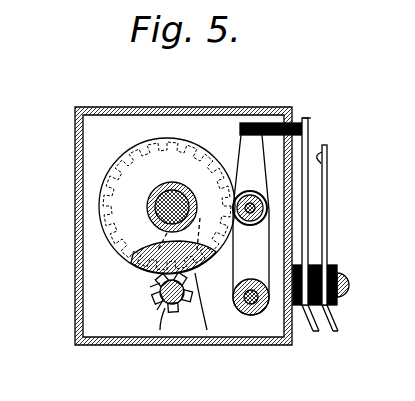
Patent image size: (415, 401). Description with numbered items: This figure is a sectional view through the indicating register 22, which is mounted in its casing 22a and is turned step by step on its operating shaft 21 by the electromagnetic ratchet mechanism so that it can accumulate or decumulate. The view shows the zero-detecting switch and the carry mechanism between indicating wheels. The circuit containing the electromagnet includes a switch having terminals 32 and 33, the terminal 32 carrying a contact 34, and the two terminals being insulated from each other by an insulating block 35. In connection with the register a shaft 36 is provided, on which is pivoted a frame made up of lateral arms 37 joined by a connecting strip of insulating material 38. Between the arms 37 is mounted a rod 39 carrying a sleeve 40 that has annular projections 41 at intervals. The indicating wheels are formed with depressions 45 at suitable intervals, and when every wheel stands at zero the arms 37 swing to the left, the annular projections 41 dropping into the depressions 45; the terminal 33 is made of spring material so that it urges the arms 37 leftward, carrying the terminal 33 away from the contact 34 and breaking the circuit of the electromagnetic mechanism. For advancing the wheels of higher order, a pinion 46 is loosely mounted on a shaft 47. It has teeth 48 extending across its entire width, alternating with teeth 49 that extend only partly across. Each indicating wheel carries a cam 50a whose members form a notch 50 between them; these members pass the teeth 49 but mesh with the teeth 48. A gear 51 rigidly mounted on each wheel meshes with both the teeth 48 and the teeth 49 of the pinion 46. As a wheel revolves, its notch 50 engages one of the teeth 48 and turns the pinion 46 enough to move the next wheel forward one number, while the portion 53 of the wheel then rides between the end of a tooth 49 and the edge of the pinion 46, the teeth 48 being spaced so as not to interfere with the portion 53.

The operating shaft 21 is at (172, 208).
The register 22 is at (114, 163).
The casing 22a is at (77, 125).
The terminal 32 is at (327, 257).
The terminal 33 is at (311, 118).
The contact 34 is at (325, 163).
The insulating block 35 is at (320, 318).
The shaft 36 is at (253, 300).
The lateral arms 37 is at (257, 243).
The connecting strip of insulating material 38 is at (286, 118).
The rod 39 is at (263, 207).
The sleeve 40 is at (270, 203).
The annular projections 41 is at (237, 195).
The depressions 45 is at (231, 192).
The pinion 46 is at (160, 330).
The shaft 47 is at (163, 300).
The teeth 48 is at (160, 283).
The teeth 49 is at (157, 287).
The notch 50 is at (207, 330).
The cam 50a is at (153, 275).
The gear 51 is at (165, 137).
The portion of the indicating wheel 53 is at (150, 256).